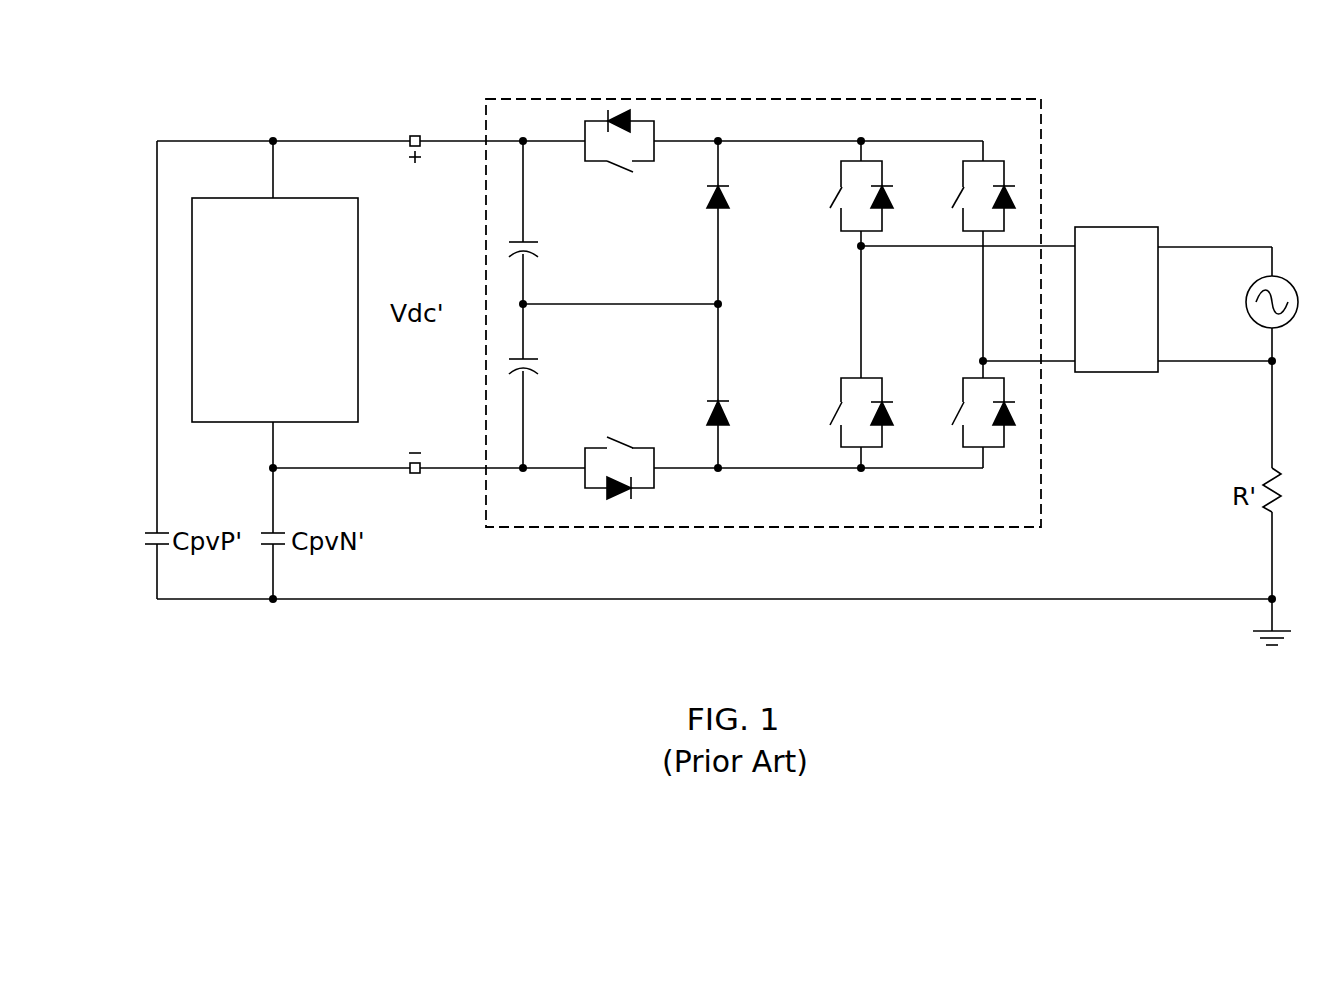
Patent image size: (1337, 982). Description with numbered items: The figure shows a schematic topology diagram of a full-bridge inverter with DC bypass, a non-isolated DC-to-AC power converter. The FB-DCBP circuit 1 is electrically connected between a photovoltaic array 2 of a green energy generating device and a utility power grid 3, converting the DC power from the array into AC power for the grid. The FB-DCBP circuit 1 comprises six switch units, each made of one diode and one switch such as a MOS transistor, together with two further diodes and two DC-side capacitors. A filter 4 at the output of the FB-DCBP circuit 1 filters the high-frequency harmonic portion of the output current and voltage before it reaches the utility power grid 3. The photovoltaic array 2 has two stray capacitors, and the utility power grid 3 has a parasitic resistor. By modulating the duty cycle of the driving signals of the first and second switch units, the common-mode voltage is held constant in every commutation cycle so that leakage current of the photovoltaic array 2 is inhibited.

The FB-DCBP circuit 1 is at (480, 90).
The photovoltaic (PV) array 2 is at (225, 194).
The utility power grid 3 is at (1285, 272).
The filter 4 is at (1153, 216).